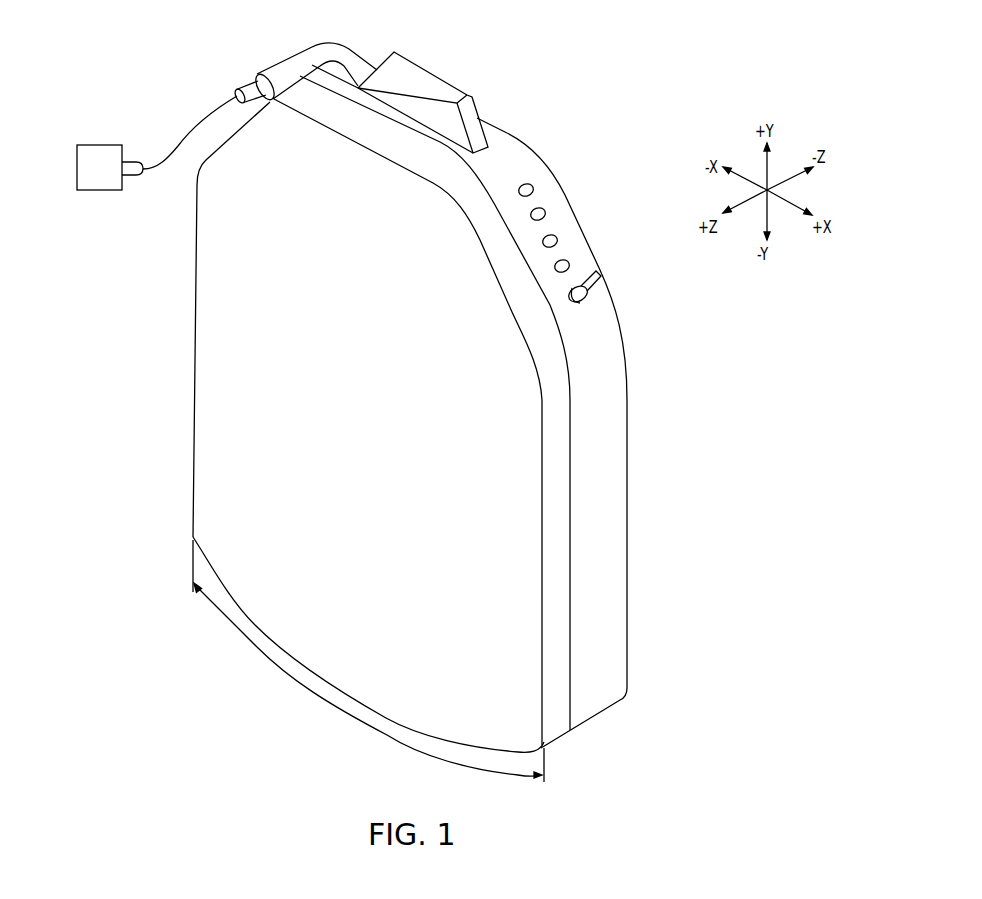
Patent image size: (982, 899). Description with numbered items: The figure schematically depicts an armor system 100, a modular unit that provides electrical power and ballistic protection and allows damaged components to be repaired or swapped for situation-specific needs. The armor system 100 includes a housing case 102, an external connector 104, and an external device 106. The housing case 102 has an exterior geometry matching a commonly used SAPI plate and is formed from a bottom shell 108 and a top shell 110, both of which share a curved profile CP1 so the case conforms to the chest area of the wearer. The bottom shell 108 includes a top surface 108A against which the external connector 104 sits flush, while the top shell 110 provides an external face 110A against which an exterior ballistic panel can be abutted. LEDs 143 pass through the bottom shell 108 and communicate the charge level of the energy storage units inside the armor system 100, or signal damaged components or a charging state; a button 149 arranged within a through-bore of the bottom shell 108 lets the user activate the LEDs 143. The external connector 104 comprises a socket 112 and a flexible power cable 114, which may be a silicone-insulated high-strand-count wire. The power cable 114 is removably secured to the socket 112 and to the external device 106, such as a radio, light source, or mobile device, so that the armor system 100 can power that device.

The armor system 100 is at (666, 111).
The housing case 102 is at (580, 239).
The external connector 104 is at (433, 74).
The external device 106 is at (76, 170).
The bottom shell 108 is at (623, 434).
The top surface 108A is at (505, 152).
The top shell 110 is at (562, 495).
The external face 110A is at (525, 626).
The socket 112 is at (288, 59).
The flexible power cable 114 is at (180, 142).
The LEDs 143 is at (534, 187).
The button 149 is at (600, 300).
The curved profile CP1 is at (308, 697).